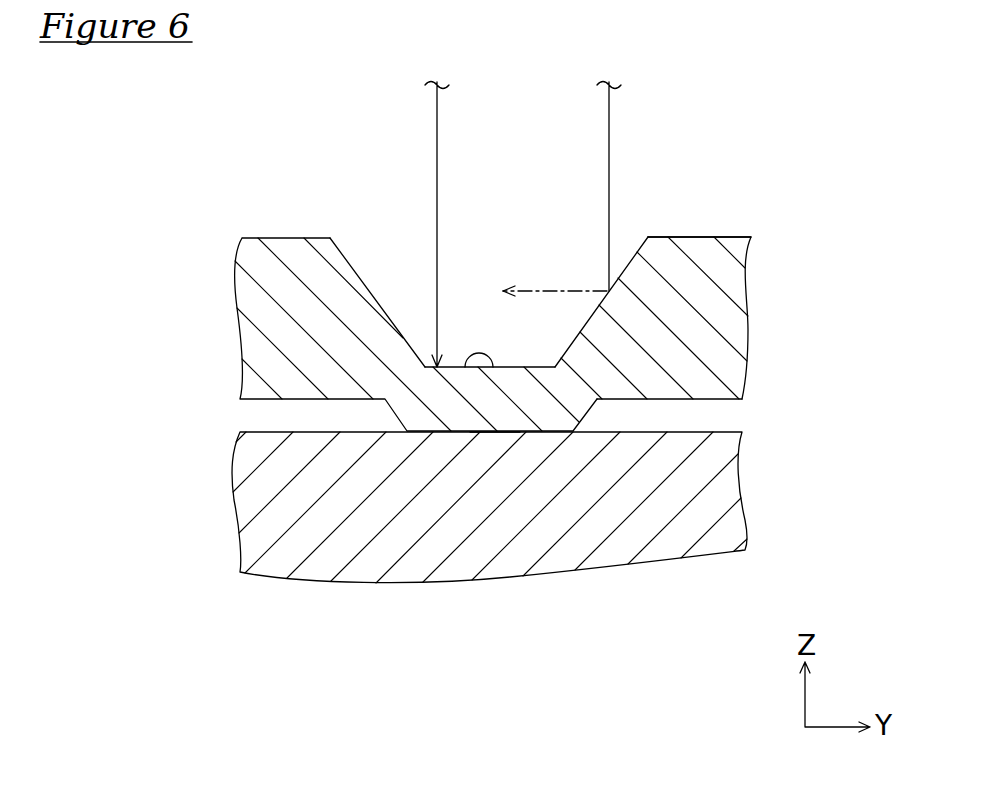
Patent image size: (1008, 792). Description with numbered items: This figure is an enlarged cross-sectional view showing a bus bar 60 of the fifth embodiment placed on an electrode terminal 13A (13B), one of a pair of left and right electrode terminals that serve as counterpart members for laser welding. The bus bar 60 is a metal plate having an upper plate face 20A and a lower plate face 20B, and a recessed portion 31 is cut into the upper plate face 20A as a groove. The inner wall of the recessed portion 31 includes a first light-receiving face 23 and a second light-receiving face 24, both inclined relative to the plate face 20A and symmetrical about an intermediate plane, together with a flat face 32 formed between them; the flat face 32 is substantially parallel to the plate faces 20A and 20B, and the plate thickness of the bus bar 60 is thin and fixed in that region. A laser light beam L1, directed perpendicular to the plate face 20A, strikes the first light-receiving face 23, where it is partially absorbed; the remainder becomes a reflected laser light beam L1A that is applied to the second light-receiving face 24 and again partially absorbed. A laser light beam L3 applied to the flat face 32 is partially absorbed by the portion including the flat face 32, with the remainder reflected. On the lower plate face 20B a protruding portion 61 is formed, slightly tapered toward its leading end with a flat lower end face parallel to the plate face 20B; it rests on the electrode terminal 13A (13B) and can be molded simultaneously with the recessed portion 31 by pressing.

The electrode terminal 13A is at (559, 511).
The electrode terminal 13B is at (645, 526).
The upper plate face 20A is at (692, 237).
The lower plate face 20B is at (680, 400).
The first light-receiving face 23 is at (634, 257).
The second light-receiving face 24 is at (339, 254).
The recessed portion 31 is at (504, 143).
The flat face 32 is at (465, 367).
The bus bar 60 is at (717, 317).
The protruding portion 61 is at (492, 434).
The laser light beam L1 is at (610, 111).
The reflected laser light beam L1A is at (592, 289).
The laser light beam L3 is at (436, 111).